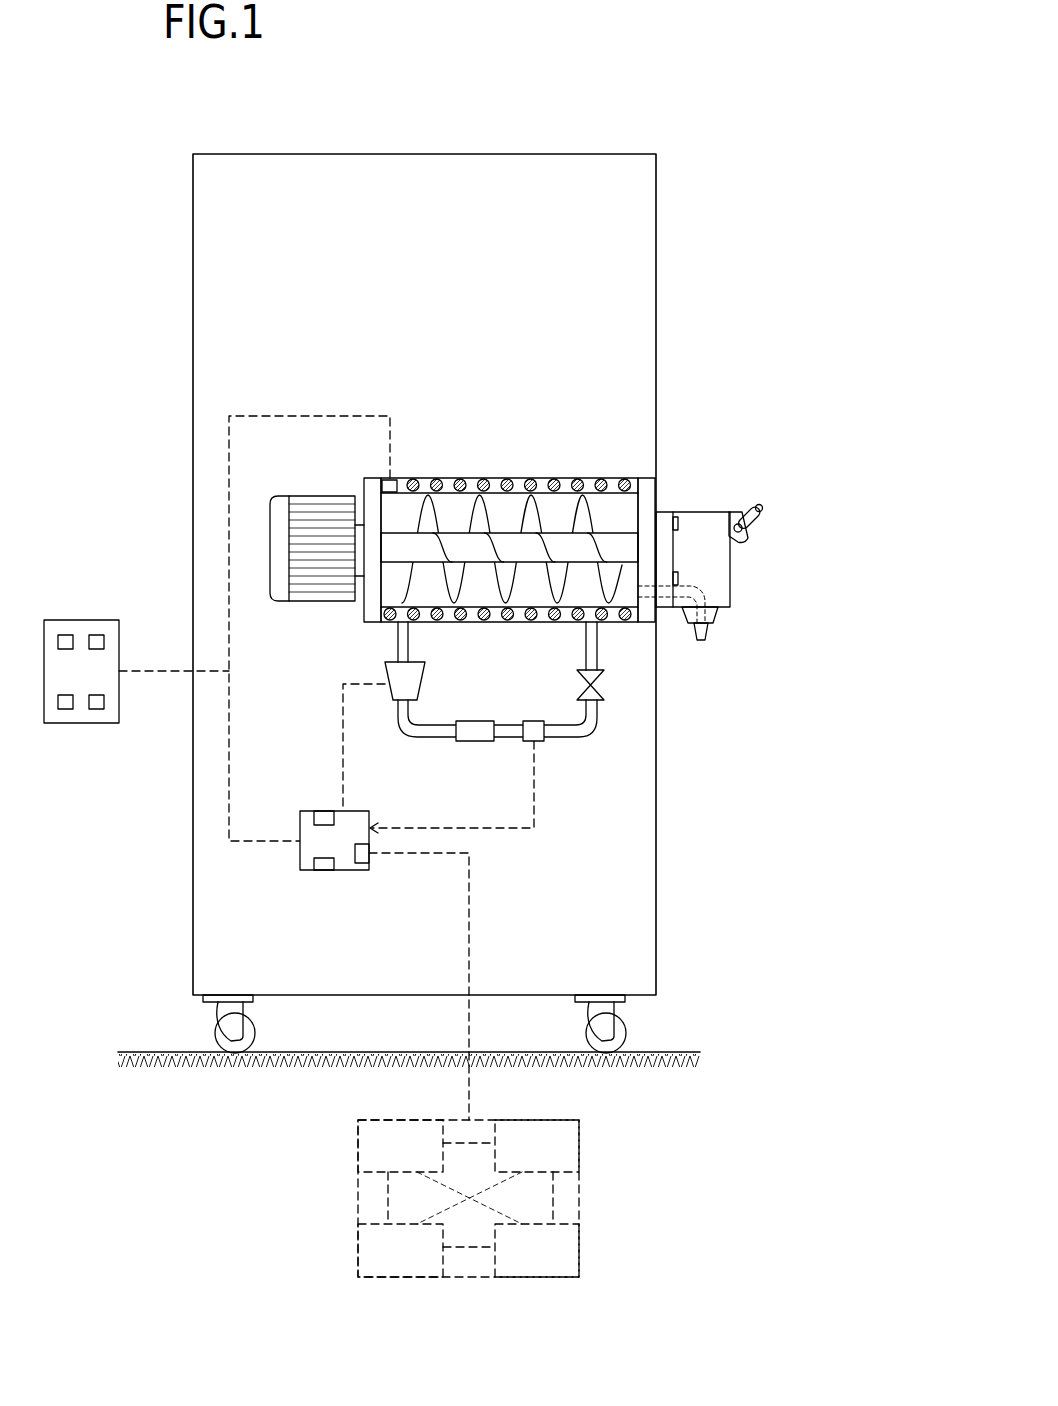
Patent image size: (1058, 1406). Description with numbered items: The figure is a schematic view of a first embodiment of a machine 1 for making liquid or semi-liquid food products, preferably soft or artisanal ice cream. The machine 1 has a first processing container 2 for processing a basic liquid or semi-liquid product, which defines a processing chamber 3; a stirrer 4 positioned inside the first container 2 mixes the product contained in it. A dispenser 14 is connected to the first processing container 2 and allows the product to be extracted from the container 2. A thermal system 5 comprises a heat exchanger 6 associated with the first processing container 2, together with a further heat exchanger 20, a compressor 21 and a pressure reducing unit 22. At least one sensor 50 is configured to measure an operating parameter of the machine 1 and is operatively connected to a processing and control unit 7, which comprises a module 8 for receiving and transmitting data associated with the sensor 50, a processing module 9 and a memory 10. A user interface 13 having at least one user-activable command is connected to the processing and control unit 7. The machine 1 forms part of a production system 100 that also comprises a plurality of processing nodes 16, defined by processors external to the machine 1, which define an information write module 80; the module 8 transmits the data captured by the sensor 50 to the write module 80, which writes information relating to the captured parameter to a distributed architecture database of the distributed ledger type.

The machine 1 is at (711, 164).
The first processing container 2 is at (464, 438).
The processing chamber 3 is at (507, 504).
The stirrer 4 is at (612, 545).
The thermal system 5 is at (558, 758).
The heat exchanger 6 is at (557, 465).
The processing and control unit 7 is at (326, 841).
The module for receiving and transmitting data 8 is at (383, 867).
The processing module 9 is at (320, 810).
The memory 10 is at (324, 871).
The user interface 13 is at (89, 606).
The dispenser 14 is at (737, 540).
The processing nodes 16 is at (468, 1198).
The further heat exchanger 20 is at (471, 759).
The compressor 21 is at (368, 669).
The pressure reducing unit 22 is at (609, 727).
The sensor 50 is at (399, 467).
The write module 80 is at (568, 1261).
The production system 100 is at (552, 1198).